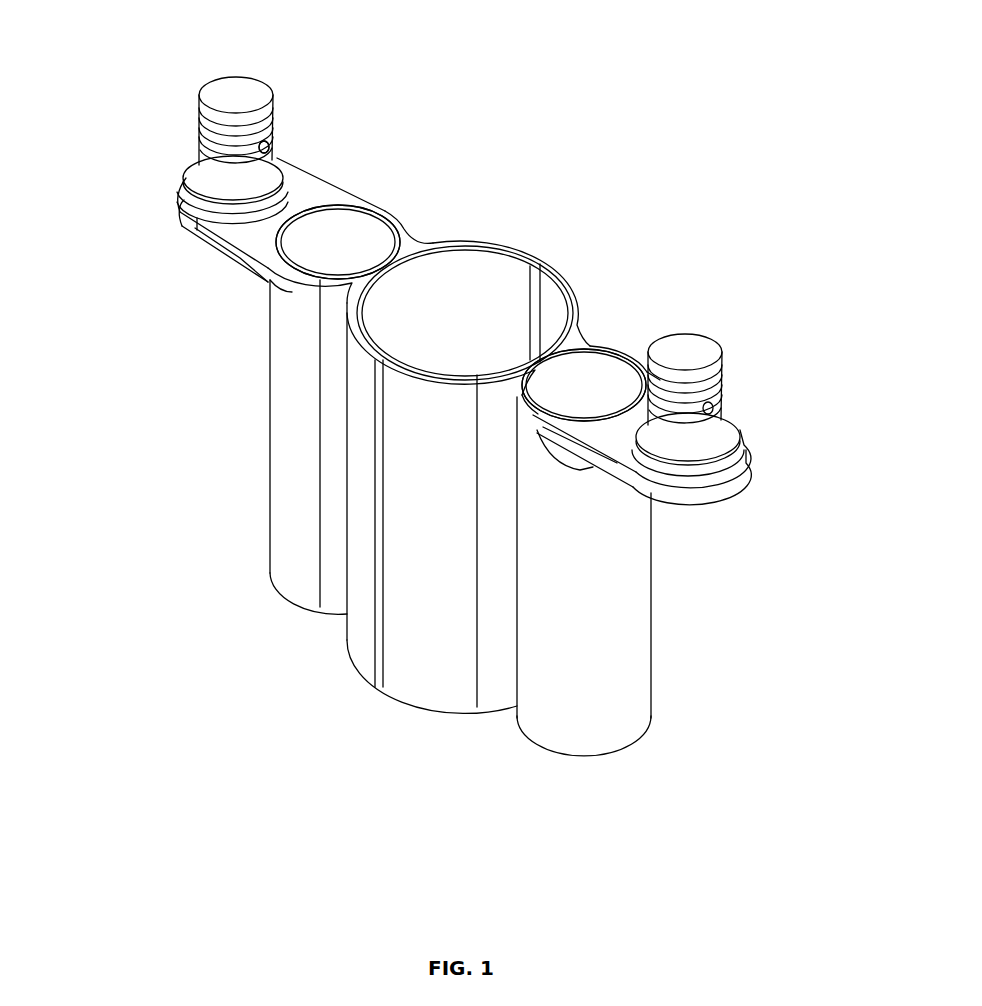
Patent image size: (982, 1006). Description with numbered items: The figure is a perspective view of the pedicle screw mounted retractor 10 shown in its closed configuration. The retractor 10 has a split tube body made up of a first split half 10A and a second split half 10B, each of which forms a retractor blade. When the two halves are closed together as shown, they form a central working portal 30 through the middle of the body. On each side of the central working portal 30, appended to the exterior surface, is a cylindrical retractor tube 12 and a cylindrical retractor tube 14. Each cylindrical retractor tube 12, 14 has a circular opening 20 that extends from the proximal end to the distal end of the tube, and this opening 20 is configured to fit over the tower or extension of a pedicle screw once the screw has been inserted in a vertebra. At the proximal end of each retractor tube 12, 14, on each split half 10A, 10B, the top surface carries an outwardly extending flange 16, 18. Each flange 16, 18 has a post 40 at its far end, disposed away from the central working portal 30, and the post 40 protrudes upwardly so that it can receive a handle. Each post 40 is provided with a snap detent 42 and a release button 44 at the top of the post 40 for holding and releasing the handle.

The pedicle screw mounted retractor 10 is at (566, 100).
The first split half 10A is at (375, 212).
The second split half 10B is at (598, 348).
The cylindrical retractor tube 12 is at (283, 550).
The cylindrical retractor tube 14 is at (620, 630).
The outwardly extending flange 16 is at (178, 212).
The outwardly extending flange 18 is at (727, 485).
The opening 20 is at (322, 245).
The central working portal 30 is at (466, 296).
The post 40 is at (201, 177).
The snap detent 42 is at (268, 134).
The release button 44 is at (213, 82).